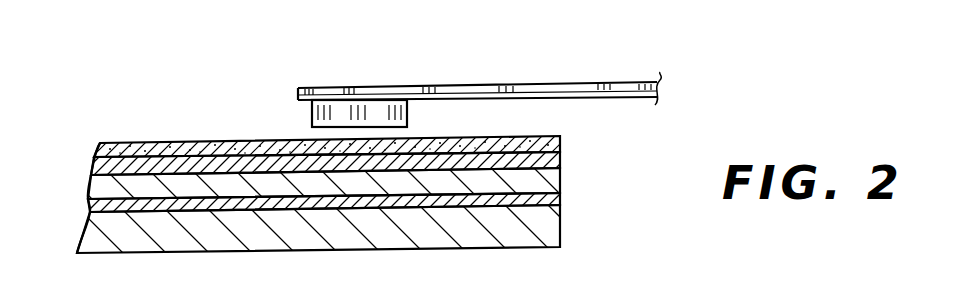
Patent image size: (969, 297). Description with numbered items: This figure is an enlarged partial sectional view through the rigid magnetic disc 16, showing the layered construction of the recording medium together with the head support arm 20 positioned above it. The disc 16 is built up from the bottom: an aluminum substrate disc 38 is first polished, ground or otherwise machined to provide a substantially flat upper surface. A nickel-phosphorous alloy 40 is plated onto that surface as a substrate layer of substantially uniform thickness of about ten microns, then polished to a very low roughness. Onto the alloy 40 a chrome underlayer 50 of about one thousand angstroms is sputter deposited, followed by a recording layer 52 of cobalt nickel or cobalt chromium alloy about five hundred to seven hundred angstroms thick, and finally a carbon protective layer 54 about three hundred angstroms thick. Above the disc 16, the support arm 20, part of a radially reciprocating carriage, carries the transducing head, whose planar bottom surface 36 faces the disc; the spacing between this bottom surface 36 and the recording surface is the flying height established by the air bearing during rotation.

The rigid magnetic disc 16 is at (112, 126).
The transducing head support arm 20 is at (565, 82).
The planar bottom surface of head 36 is at (330, 128).
The aluminum substrate disc 38 is at (543, 233).
The nickel-phosphorous alloy layer 40 is at (548, 197).
The underlayer 50 is at (100, 188).
The recording layer 52 is at (552, 160).
The protective layer 54 is at (183, 150).